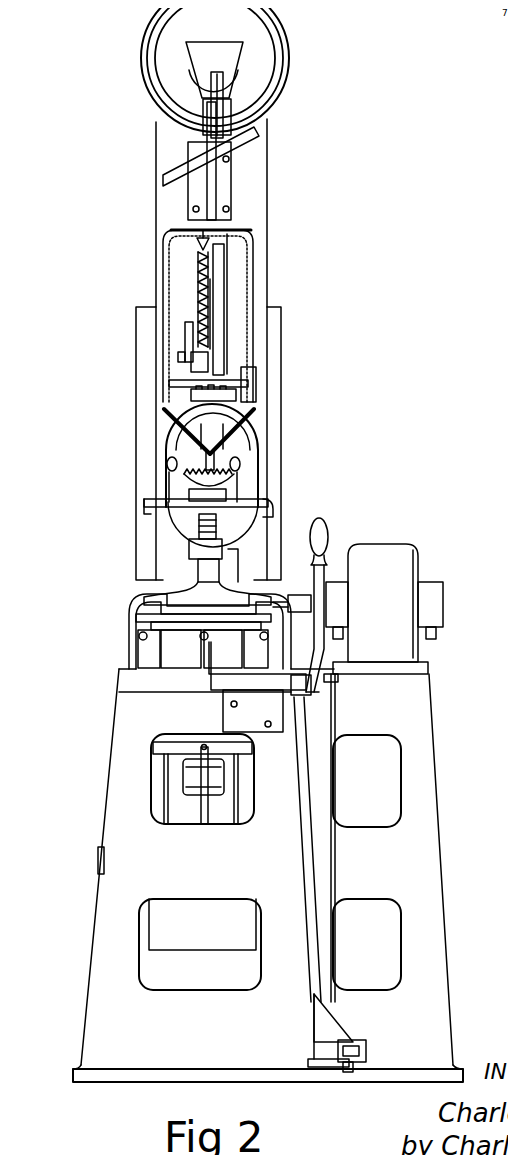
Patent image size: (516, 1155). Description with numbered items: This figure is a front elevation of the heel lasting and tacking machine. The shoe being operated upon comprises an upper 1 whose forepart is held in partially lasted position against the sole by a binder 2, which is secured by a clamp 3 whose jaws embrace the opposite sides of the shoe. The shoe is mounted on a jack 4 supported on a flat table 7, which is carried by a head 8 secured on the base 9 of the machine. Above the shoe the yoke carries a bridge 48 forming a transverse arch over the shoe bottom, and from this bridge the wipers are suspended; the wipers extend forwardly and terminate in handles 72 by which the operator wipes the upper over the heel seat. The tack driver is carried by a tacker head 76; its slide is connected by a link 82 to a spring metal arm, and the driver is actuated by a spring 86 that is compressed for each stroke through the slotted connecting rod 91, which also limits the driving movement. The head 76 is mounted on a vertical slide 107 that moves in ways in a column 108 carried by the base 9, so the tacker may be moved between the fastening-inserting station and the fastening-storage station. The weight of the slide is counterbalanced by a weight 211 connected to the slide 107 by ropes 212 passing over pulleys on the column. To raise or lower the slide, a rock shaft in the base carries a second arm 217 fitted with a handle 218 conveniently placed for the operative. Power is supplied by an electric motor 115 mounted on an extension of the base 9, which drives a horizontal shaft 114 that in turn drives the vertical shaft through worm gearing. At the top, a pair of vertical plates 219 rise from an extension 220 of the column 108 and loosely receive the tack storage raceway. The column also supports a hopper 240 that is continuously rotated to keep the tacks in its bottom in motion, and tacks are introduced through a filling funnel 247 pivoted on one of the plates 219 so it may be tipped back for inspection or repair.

The upper 1 is at (207, 482).
The binder 2 is at (227, 480).
The clamp 3 is at (153, 492).
The jack 4 is at (183, 587).
The flat table 7 is at (157, 617).
The head 8 is at (155, 653).
The base 9 is at (122, 712).
The bridge 48 is at (198, 417).
The handles 72 is at (253, 427).
The head 76 is at (217, 322).
The link 82 is at (190, 367).
The spring 86 is at (195, 275).
The connecting rod 91 is at (188, 337).
The vertical slide 107 is at (168, 542).
The column 108 is at (262, 292).
The horizontal shaft 114 is at (292, 593).
The electric motor 115 is at (380, 557).
The weight 211 is at (190, 940).
The ropes 212 is at (185, 245).
The second arm 217 is at (332, 677).
The handle 218 is at (323, 543).
The vertical plates 219 is at (225, 107).
The extension 220 is at (210, 173).
The hopper 240 is at (270, 40).
The filling funnel 247 is at (197, 50).